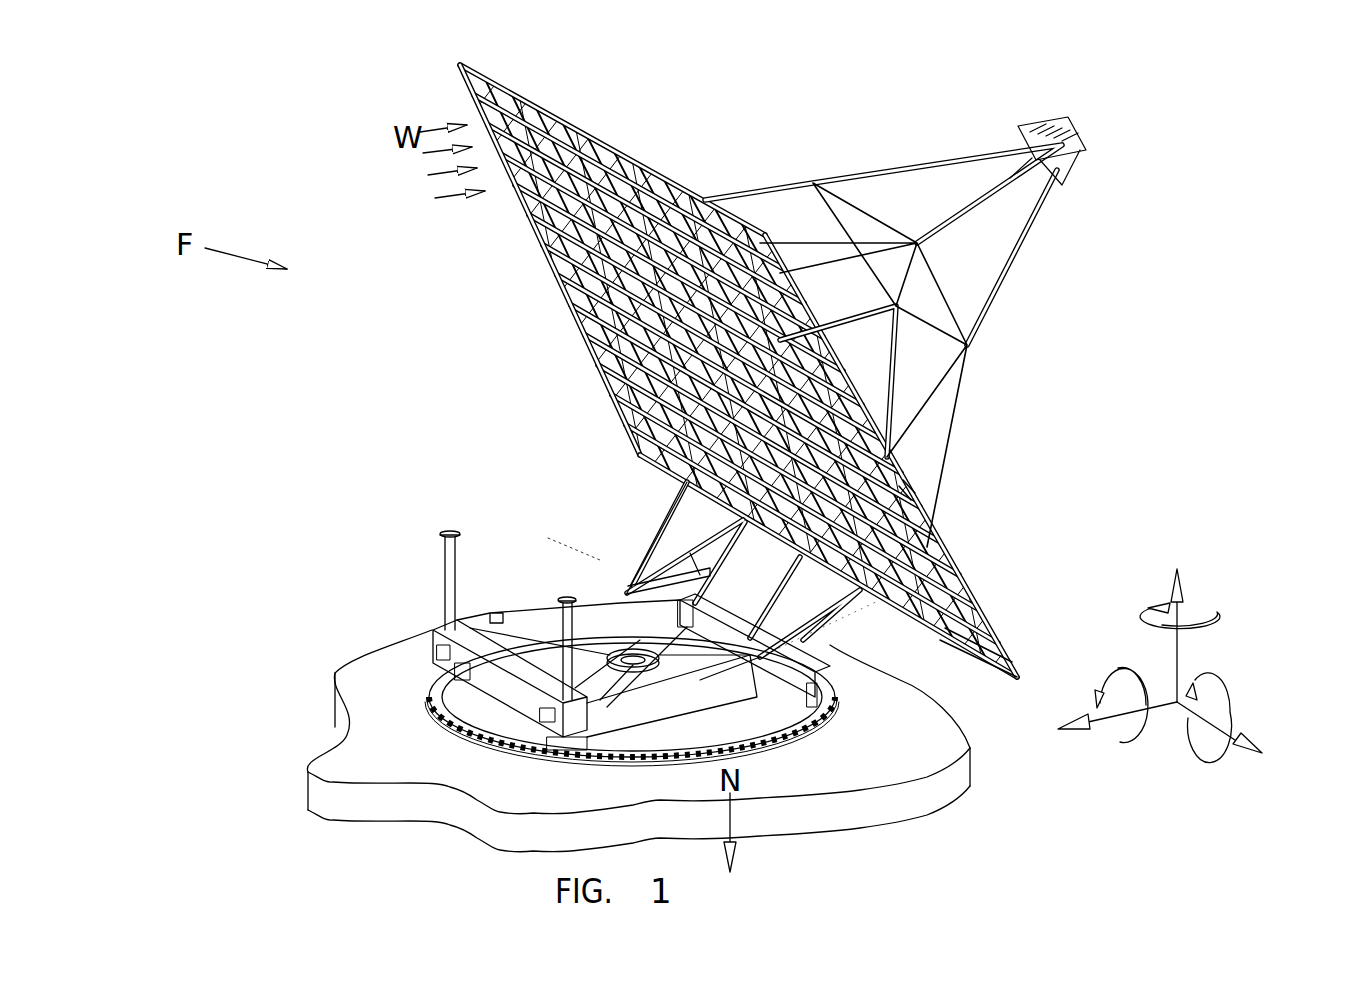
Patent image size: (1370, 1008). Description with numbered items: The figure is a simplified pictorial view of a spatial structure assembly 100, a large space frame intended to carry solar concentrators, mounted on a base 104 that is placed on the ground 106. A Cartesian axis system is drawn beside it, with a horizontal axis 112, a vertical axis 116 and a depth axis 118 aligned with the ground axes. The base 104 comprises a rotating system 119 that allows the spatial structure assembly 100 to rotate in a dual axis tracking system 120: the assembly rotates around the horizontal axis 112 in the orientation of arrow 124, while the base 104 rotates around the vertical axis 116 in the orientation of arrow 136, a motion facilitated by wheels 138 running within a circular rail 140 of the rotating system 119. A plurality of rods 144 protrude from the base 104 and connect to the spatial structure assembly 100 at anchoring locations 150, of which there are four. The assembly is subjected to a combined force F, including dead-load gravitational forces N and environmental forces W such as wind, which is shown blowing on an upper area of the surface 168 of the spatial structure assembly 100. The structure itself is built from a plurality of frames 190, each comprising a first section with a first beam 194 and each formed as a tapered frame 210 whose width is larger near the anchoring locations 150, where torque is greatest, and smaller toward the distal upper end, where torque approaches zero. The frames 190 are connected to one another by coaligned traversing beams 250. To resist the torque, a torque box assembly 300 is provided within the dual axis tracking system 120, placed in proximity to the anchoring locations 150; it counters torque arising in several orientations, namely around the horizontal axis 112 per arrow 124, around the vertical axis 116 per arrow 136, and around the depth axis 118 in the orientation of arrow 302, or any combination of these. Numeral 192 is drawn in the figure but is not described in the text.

The spatial structure assembly 100 is at (685, 504).
The base 104 is at (433, 663).
The ground 106 is at (378, 742).
The horizontal axis 112 is at (1228, 730).
The vertical axis 116 is at (1180, 642).
The depth axis 118 is at (1165, 700).
The rotating system 119 is at (550, 538).
The dual axis tracking system 120 is at (1208, 166).
The arrow 124 is at (1210, 746).
The arrow 136 is at (1210, 612).
The wheels 138 is at (513, 756).
The circular rail 140 is at (818, 735).
The rods 144 is at (632, 580).
The anchoring locations 150 is at (868, 673).
The surface 168 is at (542, 288).
The frames 190 is at (612, 436).
The side frame beam 192 is at (930, 543).
The first beam 194 is at (909, 497).
The tapered frame 210 is at (978, 662).
The traversing beams 250 is at (622, 160).
The torque box assembly 300 is at (920, 662).
The arrow 302 is at (1112, 672).